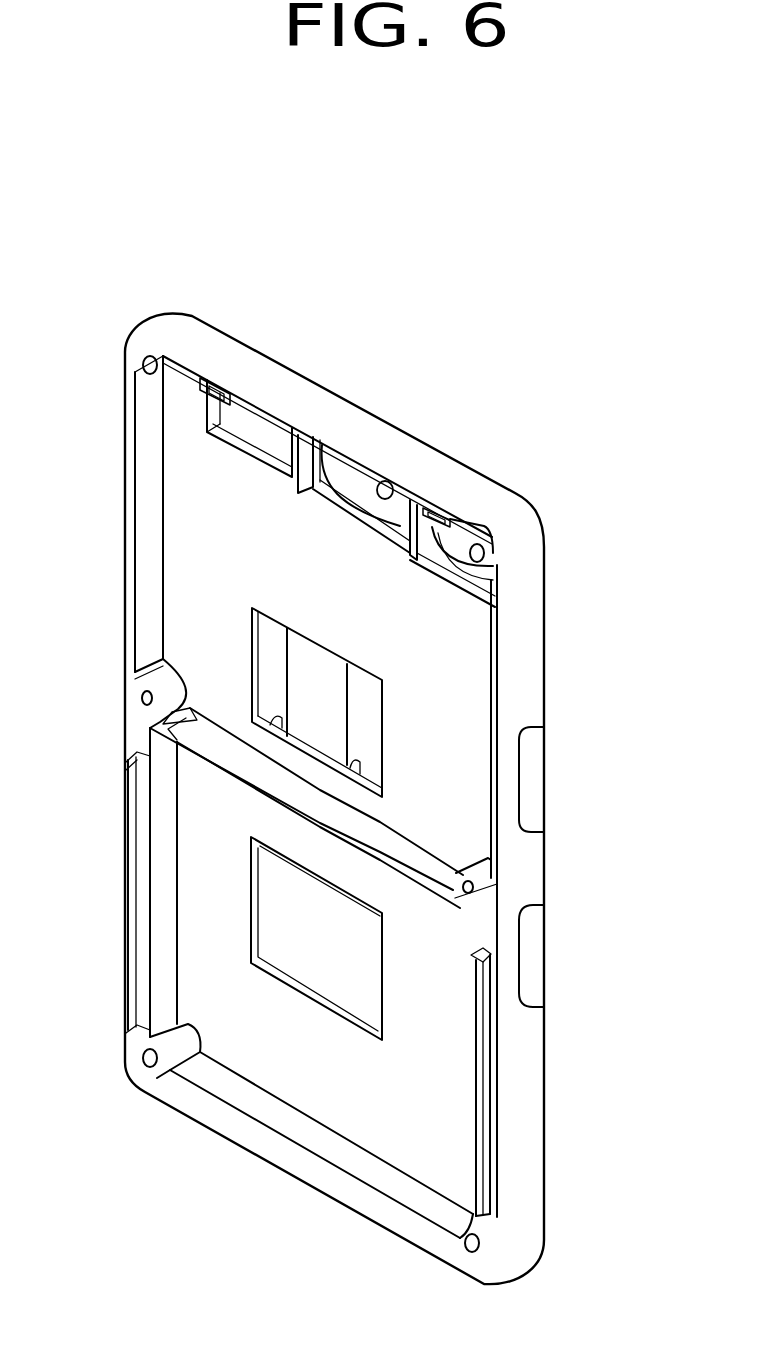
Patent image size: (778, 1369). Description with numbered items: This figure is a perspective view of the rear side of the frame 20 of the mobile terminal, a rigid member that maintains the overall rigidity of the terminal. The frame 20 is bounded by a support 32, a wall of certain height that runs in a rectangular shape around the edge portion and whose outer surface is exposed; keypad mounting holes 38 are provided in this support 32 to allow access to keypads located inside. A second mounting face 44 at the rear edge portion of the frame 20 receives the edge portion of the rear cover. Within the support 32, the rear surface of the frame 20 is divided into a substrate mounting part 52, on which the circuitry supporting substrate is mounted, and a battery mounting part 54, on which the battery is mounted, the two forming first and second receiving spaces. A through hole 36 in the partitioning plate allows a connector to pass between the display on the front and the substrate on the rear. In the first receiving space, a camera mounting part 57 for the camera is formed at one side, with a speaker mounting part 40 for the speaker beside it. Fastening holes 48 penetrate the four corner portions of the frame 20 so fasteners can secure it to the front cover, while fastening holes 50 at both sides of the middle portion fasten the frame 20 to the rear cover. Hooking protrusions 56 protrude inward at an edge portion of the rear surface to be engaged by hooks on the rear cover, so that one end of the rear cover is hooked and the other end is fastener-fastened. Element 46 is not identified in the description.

The frame 20 is at (562, 842).
The support 32 is at (528, 1153).
The through hole 36 is at (267, 650).
The keypad mounting holes 38 is at (540, 1000).
The speaker mounting part 40 is at (353, 483).
The second mounting face 44 is at (380, 485).
The side opening 46 is at (537, 945).
The fastening holes 48 is at (143, 362).
The fastening holes 50 is at (140, 695).
The substrate mounting part 52 is at (200, 525).
The battery mounting part 54 is at (200, 882).
The hooking protrusions 56 is at (212, 386).
The camera mounting part 57 is at (263, 428).